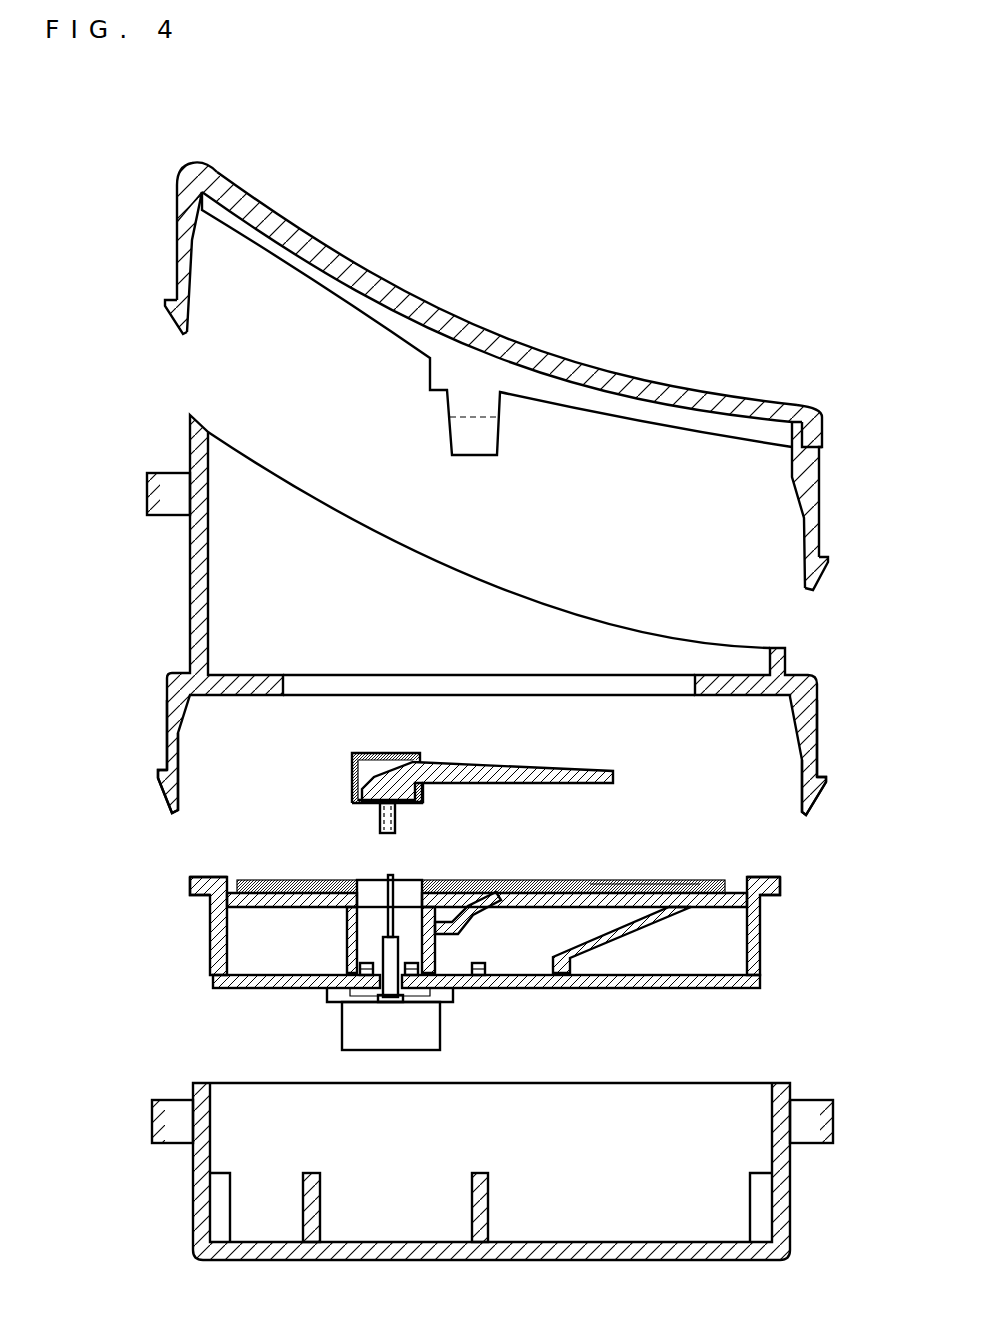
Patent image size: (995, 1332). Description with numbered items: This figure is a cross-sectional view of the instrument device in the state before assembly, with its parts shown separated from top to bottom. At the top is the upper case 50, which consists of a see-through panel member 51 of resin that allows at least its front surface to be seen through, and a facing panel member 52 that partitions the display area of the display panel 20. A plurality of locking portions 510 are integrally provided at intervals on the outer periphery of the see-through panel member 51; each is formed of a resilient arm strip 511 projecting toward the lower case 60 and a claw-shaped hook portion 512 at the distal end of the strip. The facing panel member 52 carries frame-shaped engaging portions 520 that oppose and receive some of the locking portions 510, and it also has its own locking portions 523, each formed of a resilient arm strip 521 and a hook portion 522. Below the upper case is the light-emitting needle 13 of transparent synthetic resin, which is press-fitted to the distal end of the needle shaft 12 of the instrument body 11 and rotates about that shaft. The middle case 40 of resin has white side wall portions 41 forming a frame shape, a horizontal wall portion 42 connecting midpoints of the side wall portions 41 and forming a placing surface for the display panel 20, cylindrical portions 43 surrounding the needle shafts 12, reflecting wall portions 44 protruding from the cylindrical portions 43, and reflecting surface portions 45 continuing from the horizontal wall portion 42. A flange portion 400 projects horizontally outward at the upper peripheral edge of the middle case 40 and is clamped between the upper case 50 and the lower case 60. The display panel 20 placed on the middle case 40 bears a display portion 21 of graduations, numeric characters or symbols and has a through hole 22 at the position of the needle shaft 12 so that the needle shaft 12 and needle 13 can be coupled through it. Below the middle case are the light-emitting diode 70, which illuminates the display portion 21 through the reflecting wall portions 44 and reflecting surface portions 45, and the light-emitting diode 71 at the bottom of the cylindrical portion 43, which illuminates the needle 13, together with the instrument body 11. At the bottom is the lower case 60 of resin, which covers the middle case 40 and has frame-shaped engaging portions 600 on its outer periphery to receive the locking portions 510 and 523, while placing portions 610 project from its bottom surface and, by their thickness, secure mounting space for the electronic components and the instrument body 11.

The upper case 50 is at (765, 333).
The see-through panel member 51 is at (340, 270).
The locking portion 510 is at (161, 218).
The resilient arm strip 511 is at (183, 275).
The hook portion 512 is at (165, 310).
The facing panel member 52 is at (477, 600).
The engaging portion 520 is at (153, 485).
The resilient arm strip 521 is at (177, 750).
The hook portion 522 is at (168, 790).
The locking portion 523 is at (258, 710).
The needle 13 is at (440, 775).
The middle case 40 is at (787, 914).
The flange portion 400 is at (205, 878).
The side wall portion 41 is at (217, 918).
The horizontal wall portion 42 is at (267, 897).
The cylindrical portion 43 is at (347, 945).
The reflecting wall portion 44 is at (478, 908).
The reflecting surface portion 45 is at (623, 928).
The display panel 20 is at (543, 880).
The display portion 21 is at (603, 880).
The through hole 22 is at (377, 887).
The needle shaft 12 is at (387, 913).
The light-emitting diode 70 is at (480, 978).
The light-emitting diode 71 is at (368, 993).
The instrument body 11 is at (392, 1015).
The lower case 60 is at (603, 1110).
The engaging portion 600 is at (157, 1108).
The placing portion 610 is at (222, 1203).